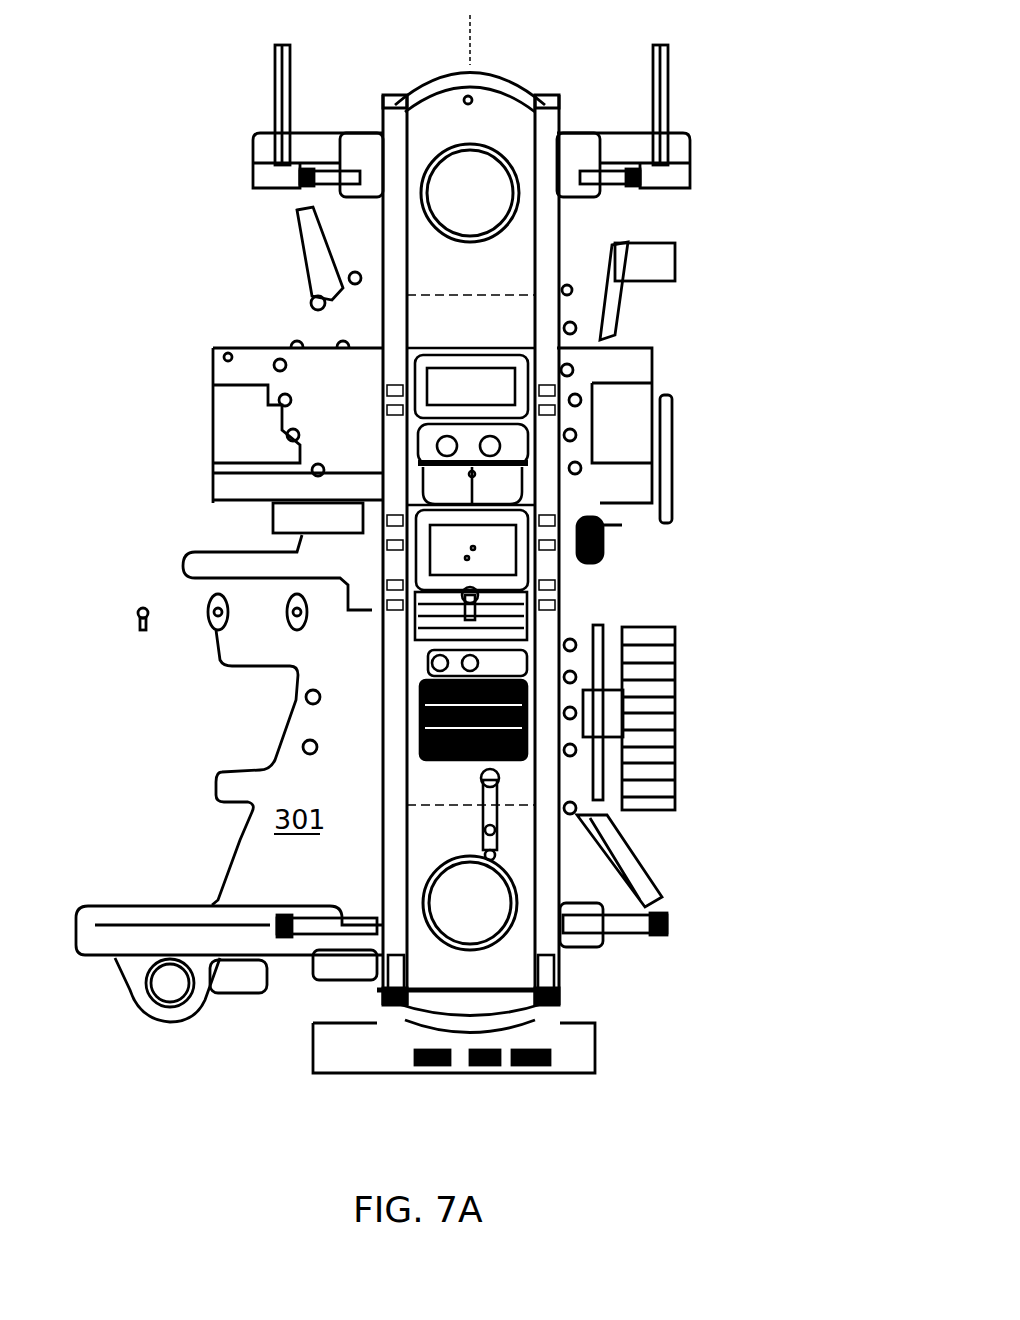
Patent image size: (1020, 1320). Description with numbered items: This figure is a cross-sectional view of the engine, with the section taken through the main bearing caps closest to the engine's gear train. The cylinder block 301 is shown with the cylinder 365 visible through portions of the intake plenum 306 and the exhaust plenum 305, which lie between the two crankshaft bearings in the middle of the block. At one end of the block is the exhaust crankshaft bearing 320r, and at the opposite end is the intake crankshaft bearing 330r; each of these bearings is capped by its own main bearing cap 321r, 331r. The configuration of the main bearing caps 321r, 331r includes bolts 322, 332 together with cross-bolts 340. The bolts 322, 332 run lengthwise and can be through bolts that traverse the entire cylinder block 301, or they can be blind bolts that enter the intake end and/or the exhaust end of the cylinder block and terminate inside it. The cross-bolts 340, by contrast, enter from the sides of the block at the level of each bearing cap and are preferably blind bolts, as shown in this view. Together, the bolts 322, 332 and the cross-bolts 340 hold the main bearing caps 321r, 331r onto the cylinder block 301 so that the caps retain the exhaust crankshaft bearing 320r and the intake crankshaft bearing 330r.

The cylinder block 301 is at (375, 559).
The exhaust plenum 305 is at (415, 473).
The intake plenum 306 is at (415, 722).
The exhaust crankshaft bearing 320r is at (500, 207).
The main bearing cap 321r is at (478, 132).
The bolts 322 is at (395, 165).
The intake crankshaft bearing 330r is at (500, 917).
The main bearing cap 331r is at (512, 968).
The bolts 332 is at (397, 950).
The cross-bolts 340 is at (317, 177).
The cylinder 365 is at (180, 498).